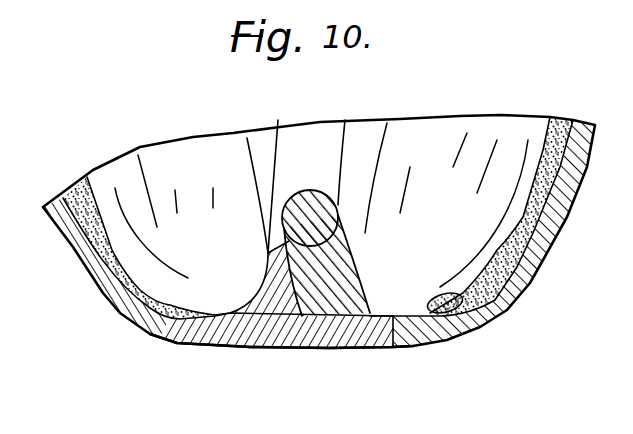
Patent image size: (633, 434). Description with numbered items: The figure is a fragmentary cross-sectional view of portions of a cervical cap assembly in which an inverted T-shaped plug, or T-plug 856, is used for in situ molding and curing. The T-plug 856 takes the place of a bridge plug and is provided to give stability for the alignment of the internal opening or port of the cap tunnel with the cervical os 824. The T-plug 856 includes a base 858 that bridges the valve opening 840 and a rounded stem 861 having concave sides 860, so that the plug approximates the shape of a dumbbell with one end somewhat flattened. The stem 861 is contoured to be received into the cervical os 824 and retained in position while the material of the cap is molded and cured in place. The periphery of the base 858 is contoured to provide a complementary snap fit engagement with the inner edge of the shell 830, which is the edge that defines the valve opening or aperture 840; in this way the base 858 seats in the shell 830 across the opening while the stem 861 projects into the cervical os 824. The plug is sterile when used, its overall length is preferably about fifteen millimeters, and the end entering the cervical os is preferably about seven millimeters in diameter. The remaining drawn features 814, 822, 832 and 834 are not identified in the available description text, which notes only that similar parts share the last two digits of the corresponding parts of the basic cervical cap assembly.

The cavity wall 814 is at (383, 136).
The channel slot 822 is at (343, 135).
The cervical os 824 is at (300, 288).
The shell 830 is at (500, 316).
The outer shell wall 832 is at (466, 322).
The sole plate 834 is at (337, 305).
The valve opening 840 is at (240, 325).
The T-plug 856 is at (308, 272).
The base 858 is at (377, 305).
The concave sides 860 is at (350, 275).
The stem 861 is at (310, 197).